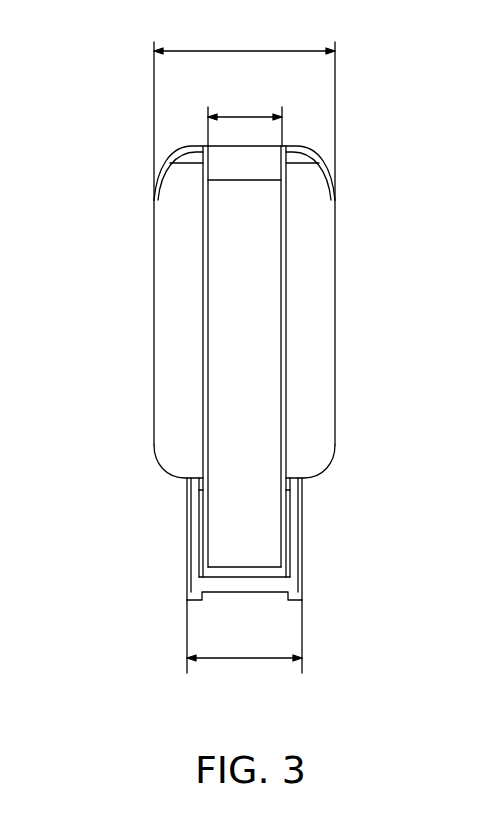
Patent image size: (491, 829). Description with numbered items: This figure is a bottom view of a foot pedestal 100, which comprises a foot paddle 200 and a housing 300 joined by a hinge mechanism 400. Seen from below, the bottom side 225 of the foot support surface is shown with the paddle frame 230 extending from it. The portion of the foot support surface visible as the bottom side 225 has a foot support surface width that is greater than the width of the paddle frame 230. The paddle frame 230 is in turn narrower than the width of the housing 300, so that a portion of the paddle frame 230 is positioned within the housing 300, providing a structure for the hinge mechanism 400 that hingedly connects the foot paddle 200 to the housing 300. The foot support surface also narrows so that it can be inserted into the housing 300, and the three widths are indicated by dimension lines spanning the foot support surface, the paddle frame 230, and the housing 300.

The foot pedestal 100 is at (113, 183).
The foot paddle 200 is at (307, 213).
The bottom side of the foot support surface 225 is at (308, 363).
The paddle frame 230 is at (250, 313).
The housing 300 is at (293, 539).
The hinge mechanism 400 is at (226, 515).